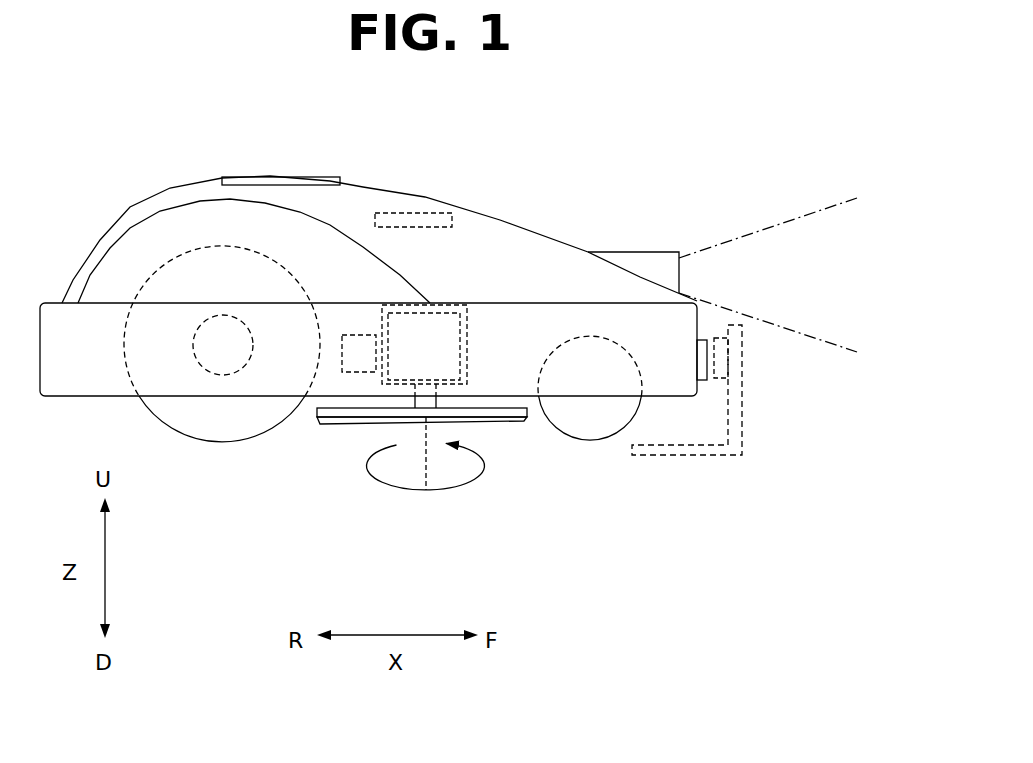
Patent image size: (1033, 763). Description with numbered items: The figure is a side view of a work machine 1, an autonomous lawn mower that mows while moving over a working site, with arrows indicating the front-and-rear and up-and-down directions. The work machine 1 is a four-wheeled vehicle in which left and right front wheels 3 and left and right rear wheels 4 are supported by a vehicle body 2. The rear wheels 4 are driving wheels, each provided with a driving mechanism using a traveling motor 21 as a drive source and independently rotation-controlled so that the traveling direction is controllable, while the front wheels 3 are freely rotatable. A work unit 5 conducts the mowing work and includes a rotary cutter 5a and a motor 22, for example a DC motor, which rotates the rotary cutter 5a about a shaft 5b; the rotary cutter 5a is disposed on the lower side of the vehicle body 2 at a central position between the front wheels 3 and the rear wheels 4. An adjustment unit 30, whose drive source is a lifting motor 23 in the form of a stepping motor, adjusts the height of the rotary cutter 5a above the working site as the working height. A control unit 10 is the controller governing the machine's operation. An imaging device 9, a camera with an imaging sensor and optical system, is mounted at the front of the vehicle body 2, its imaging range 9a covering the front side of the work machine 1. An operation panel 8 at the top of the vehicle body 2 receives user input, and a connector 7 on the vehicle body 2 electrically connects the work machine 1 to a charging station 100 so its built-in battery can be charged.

The work machine 1 is at (197, 96).
The vehicle body 2 is at (421, 195).
The front wheels 3 is at (587, 440).
The rear wheels 4 is at (235, 443).
The work unit 5 is at (325, 452).
The rotary cutter 5a is at (365, 422).
The shaft 5b is at (428, 472).
The connector 7 is at (702, 382).
The operation panel 8 is at (290, 177).
The imaging device 9 is at (624, 252).
The imaging range 9a is at (769, 228).
The control unit 10 is at (388, 213).
The traveling motor 21 is at (221, 315).
The motor 22 is at (444, 313).
The lifting motor 23 is at (343, 335).
The adjustment unit 30 is at (369, 300).
The charging station 100 is at (742, 422).